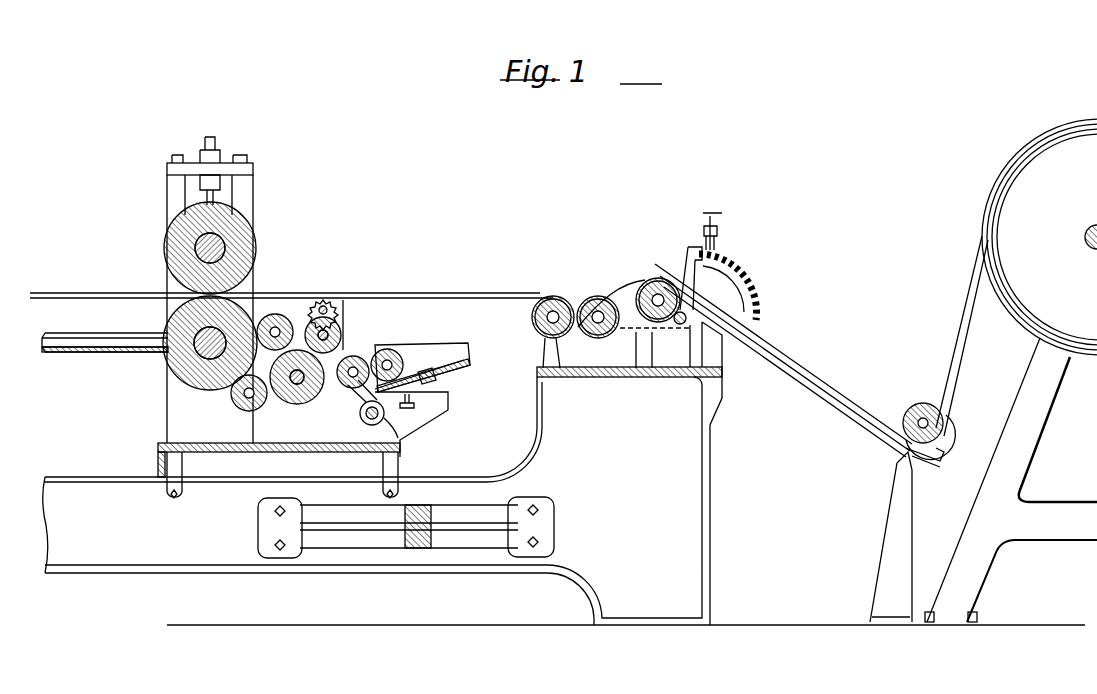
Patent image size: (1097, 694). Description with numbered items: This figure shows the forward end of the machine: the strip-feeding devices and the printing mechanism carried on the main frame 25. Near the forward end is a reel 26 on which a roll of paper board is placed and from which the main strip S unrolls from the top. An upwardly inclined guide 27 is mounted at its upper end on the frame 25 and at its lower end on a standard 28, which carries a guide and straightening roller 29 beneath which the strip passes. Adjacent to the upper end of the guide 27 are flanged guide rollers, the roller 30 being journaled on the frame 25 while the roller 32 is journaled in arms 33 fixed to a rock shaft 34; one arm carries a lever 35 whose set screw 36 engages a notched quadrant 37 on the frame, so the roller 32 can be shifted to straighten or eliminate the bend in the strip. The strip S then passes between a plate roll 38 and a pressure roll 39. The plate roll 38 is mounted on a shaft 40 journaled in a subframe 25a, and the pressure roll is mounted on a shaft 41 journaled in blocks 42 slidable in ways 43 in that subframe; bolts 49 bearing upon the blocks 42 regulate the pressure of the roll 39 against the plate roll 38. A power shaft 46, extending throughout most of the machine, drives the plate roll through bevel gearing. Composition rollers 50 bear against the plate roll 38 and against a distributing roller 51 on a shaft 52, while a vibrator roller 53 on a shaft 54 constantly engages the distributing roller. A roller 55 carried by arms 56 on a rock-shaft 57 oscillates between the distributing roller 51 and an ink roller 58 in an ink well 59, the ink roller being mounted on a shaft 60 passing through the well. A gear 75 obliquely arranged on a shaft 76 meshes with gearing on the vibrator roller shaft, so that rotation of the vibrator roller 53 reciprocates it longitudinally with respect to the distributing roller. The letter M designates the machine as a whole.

The main frame 25 is at (676, 443).
The subframe 25a is at (175, 440).
The reel 26 is at (1040, 400).
The upwardly inclined guide 27 is at (780, 348).
The standard 28 is at (897, 511).
The guide and straightening roller 29 is at (923, 404).
The flanged guide roller 30 is at (658, 277).
The flanged guide roller 32 is at (604, 297).
The arms 33 is at (636, 326).
The rock shaft 34 is at (679, 325).
The lever 35 is at (700, 272).
The set screw 36 is at (724, 215).
The notched quadrant 37 is at (748, 288).
The plate roll 38 is at (178, 360).
The pressure roll 39 is at (170, 250).
The shaft 40 is at (204, 358).
The shaft 41 is at (196, 252).
The blocks 42 is at (233, 233).
The ways 43 is at (195, 190).
The power shaft 46 is at (78, 338).
The bolts 49 is at (212, 200).
The composition rollers 50 is at (275, 314).
The distributing roller 51 is at (302, 398).
The shaft 52 is at (308, 386).
The vibrator roller 53 is at (341, 318).
The shaft 54 is at (342, 340).
The roller 55 is at (360, 360).
The arms 56 is at (362, 421).
The rock-shaft 57 is at (385, 425).
The ink roller 58 is at (394, 353).
The ink well 59 is at (456, 364).
The shaft 60 is at (402, 368).
The gear 75 is at (333, 312).
The shaft 76 is at (325, 305).
The machine M is at (302, 184).
The main strip S is at (490, 293).